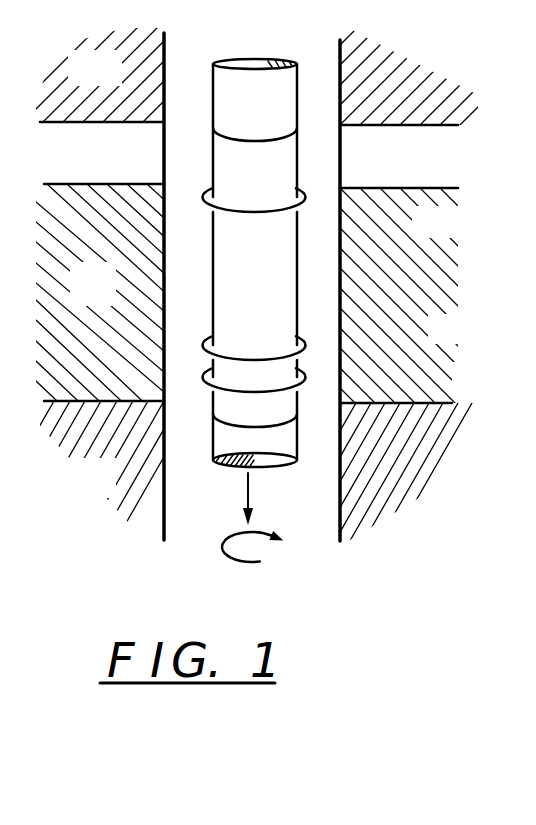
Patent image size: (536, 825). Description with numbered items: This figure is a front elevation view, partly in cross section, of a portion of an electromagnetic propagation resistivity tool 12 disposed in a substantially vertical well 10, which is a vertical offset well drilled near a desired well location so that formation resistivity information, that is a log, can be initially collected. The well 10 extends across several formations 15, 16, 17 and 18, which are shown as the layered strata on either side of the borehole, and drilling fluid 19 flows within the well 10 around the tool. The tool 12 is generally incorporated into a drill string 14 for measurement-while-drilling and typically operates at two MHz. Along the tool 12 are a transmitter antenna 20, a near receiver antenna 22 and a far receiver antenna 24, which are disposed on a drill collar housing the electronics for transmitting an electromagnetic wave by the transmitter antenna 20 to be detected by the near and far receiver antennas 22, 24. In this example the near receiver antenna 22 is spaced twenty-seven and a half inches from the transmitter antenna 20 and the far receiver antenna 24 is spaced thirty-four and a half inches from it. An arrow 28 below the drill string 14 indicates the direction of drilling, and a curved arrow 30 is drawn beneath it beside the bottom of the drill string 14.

The well 10 is at (338, 67).
The electromagnetic propagation resistivity tool 12 is at (277, 292).
The drill string 14 is at (232, 76).
The formation 15 is at (107, 84).
The formation 16 is at (105, 171).
The formation 17 is at (105, 302).
The formation 18 is at (103, 495).
The drilling fluid 19 is at (195, 462).
The transmitter antenna 20 is at (270, 212).
The near receiver antenna 22 is at (262, 360).
The far receiver antenna 24 is at (260, 394).
The arrow 28 is at (250, 487).
The rotation arrow 30 is at (224, 548).